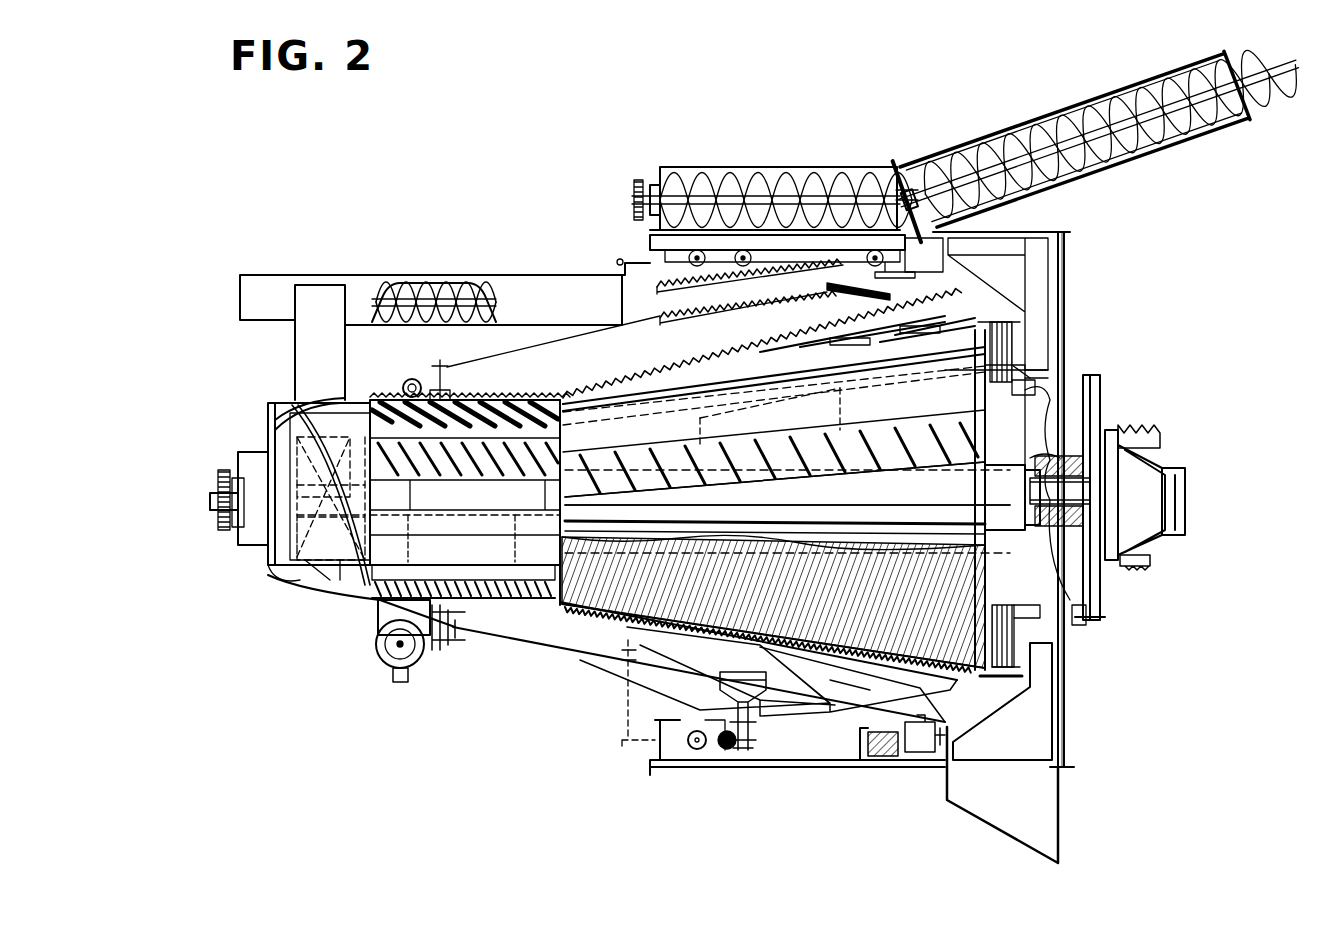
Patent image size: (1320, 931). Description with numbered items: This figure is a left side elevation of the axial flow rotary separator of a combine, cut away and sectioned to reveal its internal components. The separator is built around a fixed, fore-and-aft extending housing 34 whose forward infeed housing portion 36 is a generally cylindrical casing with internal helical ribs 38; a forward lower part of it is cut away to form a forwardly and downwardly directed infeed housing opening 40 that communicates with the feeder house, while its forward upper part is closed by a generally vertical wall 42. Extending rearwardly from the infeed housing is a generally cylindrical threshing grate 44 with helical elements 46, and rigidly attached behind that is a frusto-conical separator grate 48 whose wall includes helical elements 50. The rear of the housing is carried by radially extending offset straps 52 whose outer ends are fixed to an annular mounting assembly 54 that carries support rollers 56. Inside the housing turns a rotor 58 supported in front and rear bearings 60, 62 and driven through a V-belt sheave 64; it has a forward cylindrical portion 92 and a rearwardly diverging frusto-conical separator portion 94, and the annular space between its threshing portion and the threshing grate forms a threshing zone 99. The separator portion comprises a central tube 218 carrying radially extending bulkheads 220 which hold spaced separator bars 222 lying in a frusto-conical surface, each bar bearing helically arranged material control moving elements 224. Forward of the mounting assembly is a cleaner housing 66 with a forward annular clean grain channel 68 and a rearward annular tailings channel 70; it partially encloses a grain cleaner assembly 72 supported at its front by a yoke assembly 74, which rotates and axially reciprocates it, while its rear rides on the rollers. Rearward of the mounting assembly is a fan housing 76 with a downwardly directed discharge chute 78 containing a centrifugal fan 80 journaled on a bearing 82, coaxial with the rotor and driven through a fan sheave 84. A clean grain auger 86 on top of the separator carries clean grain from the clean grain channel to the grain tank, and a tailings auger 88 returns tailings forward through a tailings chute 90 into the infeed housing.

The housing 34 is at (571, 606).
The infeed housing portion 36 is at (300, 410).
The helical ribs 38 is at (285, 420).
The infeed housing opening 40 is at (343, 574).
The vertical wall 42 is at (300, 427).
The threshing grate 44 is at (483, 400).
The helical elements 46 is at (570, 398).
The separator grate 48 is at (661, 383).
The helical elements 50 is at (968, 566).
The offset straps 52 is at (925, 700).
The annular mounting assembly 54 is at (922, 760).
The support rollers 56 is at (932, 770).
The rotor 58 is at (290, 585).
The front bearing 60 is at (240, 515).
The rear bearing 62 is at (1094, 530).
The V-belt sheave 64 is at (1140, 562).
The cleaner housing 66 is at (752, 772).
The clean grain channel 68 is at (706, 762).
The tailings channel 70 is at (848, 762).
The grain cleaner assembly 72 is at (596, 672).
The yoke assembly 74 is at (366, 658).
The fan housing 76 is at (1035, 232).
The discharge chute 78 is at (1040, 826).
The centrifugal fan 80 is at (1002, 750).
The bearing 82 is at (1042, 526).
The fan sheave 84 is at (1080, 625).
The clean grain auger 86 is at (845, 160).
The tailings auger 88 is at (528, 260).
The tailings chute 90 is at (295, 338).
The forward cylindrical portion 92 is at (322, 568).
The frusto-conical separator portion 94 is at (976, 345).
The threshing zone 99 is at (392, 398).
The central tube 218 is at (1005, 470).
The bulkheads 220 is at (705, 417).
The separator bars 222 is at (768, 480).
The material control moving elements 224 is at (870, 475).